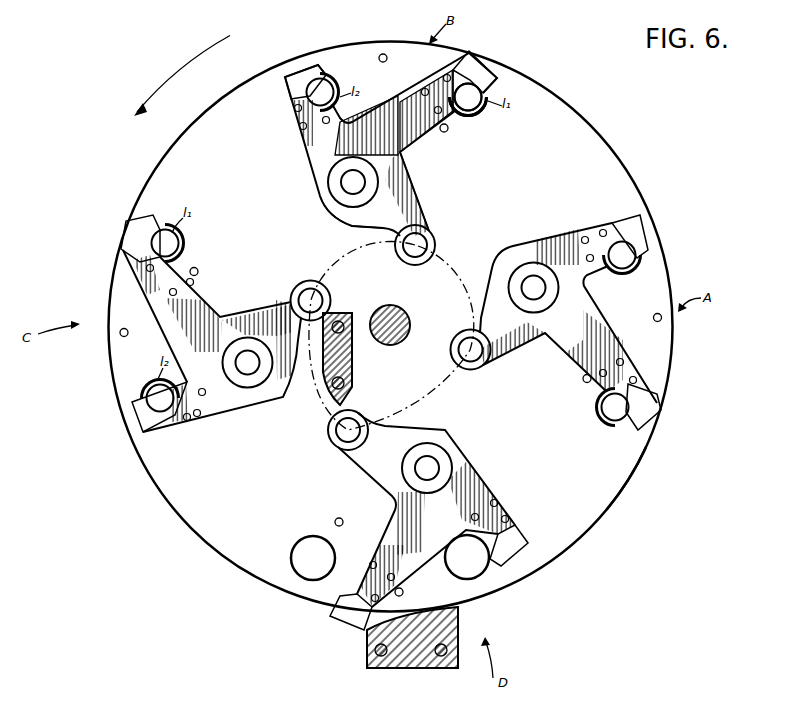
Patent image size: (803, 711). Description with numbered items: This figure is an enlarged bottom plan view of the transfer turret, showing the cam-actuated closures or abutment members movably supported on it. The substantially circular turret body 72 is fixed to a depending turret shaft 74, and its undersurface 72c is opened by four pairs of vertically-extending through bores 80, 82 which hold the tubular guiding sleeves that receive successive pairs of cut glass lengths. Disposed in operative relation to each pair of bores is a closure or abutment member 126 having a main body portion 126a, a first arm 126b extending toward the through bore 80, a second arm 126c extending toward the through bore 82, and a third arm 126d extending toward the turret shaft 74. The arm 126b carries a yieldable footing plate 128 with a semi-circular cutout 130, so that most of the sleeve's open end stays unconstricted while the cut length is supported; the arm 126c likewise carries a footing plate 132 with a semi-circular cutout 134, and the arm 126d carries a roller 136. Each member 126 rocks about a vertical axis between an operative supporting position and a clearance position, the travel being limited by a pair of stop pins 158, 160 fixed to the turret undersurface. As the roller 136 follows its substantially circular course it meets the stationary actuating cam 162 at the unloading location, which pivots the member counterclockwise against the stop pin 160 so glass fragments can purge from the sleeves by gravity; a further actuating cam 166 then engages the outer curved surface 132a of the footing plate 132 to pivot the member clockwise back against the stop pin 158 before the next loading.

The turret body 72 is at (600, 522).
The disc rim 72c is at (607, 492).
The turret shaft 74 is at (406, 318).
The through bore 80 is at (475, 114).
The through bore 82 is at (337, 84).
The closure or abutment member 126 is at (419, 152).
The main body portion 126a is at (330, 210).
The first arm 126b is at (309, 148).
The second arm 126c is at (400, 96).
The third arm 126d is at (414, 217).
The footing plate 128 is at (296, 78).
The semi-circular cutout 130 is at (352, 182).
The footing plate 132 is at (486, 76).
The outer curved surface 132a is at (470, 50).
The semi-circular cutout 134 is at (484, 96).
The roller 136 is at (434, 240).
The stop pin 158 is at (448, 133).
The stop pin 160 is at (385, 54).
The actuating cam 162 is at (350, 370).
The actuating cam 166 is at (428, 668).